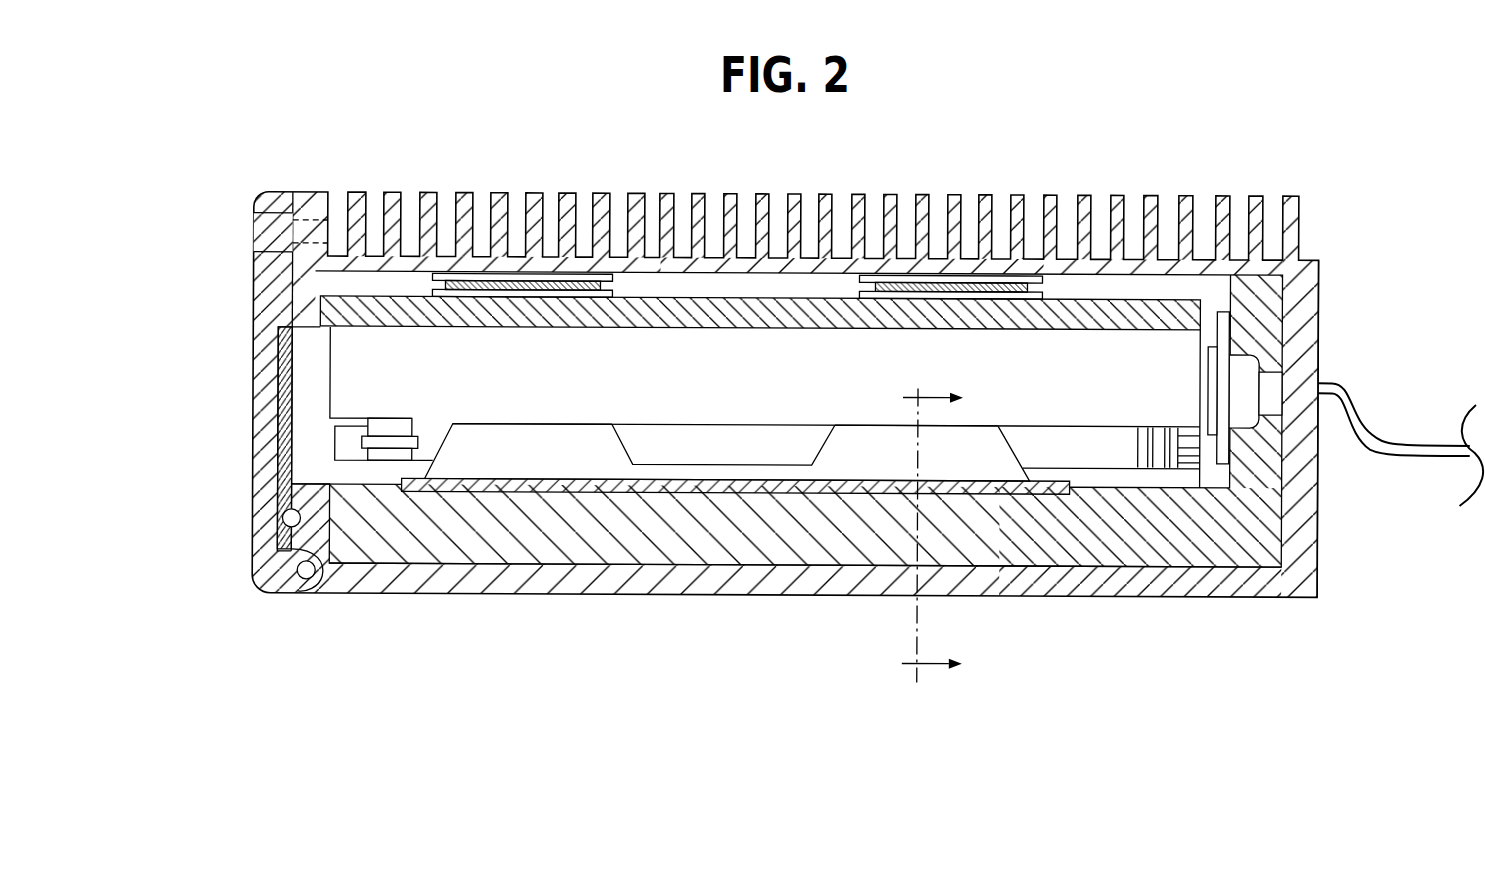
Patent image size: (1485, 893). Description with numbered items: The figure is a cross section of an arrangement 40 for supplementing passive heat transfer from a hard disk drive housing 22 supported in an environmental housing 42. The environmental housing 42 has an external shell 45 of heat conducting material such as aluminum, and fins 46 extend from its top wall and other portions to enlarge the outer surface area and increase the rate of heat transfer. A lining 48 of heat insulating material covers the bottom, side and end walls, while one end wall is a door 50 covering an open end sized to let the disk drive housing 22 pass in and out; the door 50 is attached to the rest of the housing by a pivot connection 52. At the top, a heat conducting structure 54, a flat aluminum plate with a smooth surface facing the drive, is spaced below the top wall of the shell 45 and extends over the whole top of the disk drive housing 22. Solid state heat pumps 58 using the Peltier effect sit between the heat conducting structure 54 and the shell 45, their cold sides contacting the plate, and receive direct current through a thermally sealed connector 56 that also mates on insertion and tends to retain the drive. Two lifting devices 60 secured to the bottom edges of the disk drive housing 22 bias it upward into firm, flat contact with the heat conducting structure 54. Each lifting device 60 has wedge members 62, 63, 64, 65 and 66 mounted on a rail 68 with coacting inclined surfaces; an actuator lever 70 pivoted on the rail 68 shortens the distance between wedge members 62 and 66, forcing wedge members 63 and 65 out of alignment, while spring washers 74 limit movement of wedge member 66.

The hard disk drive housing 22 is at (332, 342).
The arrangement 40 is at (1110, 150).
The environmental housing 42 is at (1323, 280).
The external shell 45 is at (1167, 257).
The fins 46 is at (1087, 195).
The lining 48 is at (303, 444).
The door 50 is at (263, 532).
The pivot connection 52 is at (312, 581).
The heat conducting structure 54 is at (1190, 311).
The thermally sealed connector 56 is at (1218, 381).
The solid state heat pump 58 is at (624, 287).
The lifting device 60 is at (412, 417).
The wedge member 62 is at (433, 433).
The wedge member 63 is at (578, 440).
The wedge member 64 is at (730, 463).
The wedge member 65 is at (872, 426).
The wedge member 66 is at (1047, 442).
The rail 68 is at (378, 428).
The actuator lever 70 is at (352, 453).
The spring washers 74 is at (1158, 427).